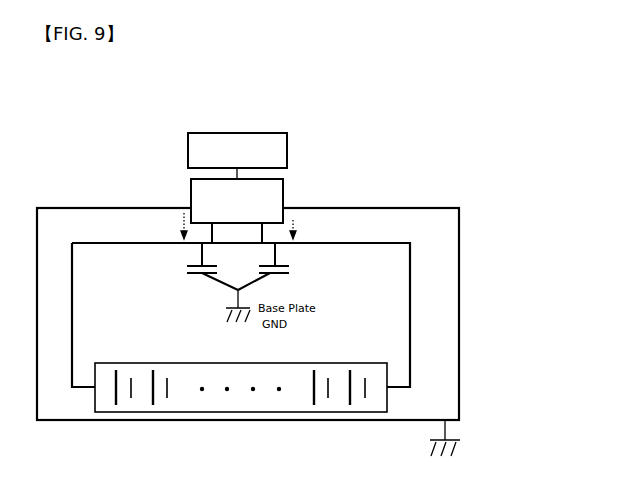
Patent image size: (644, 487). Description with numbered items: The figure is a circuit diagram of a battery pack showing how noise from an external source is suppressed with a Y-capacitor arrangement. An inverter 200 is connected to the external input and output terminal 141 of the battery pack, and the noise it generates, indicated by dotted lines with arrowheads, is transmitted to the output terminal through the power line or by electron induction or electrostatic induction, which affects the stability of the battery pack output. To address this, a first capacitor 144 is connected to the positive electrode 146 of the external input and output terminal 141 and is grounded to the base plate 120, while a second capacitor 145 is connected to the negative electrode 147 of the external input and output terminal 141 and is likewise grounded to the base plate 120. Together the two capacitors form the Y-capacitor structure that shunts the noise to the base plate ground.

The base plate 120 is at (460, 292).
The inverter 200 is at (287, 145).
The external input and output terminal 141 is at (283, 190).
The first capacitor 144 is at (193, 276).
The second capacitor 145 is at (281, 277).
The positive electrode 146 is at (198, 253).
The negative electrode 147 is at (278, 254).